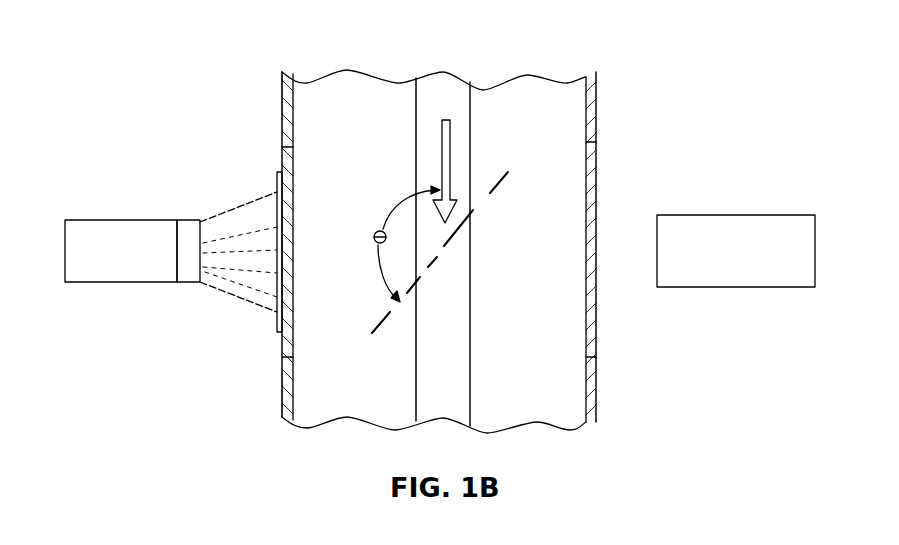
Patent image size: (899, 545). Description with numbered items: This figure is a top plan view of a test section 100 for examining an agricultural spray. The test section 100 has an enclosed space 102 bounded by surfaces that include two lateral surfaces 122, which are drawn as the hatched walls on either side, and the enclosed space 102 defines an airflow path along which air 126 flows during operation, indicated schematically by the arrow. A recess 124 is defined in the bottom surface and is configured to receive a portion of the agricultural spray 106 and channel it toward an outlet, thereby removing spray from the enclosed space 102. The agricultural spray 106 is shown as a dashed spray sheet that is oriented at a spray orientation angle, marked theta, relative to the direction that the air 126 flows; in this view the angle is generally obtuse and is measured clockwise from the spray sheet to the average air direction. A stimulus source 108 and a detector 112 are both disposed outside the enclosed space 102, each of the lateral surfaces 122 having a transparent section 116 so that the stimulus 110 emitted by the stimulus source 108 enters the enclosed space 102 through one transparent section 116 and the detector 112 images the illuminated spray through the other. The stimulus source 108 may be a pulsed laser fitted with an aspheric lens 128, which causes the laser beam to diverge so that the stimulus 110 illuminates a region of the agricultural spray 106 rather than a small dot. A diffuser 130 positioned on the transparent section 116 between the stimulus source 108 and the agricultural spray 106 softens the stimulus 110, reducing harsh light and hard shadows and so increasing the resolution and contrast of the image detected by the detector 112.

The test section 100 is at (625, 48).
The enclosed space 102 is at (533, 101).
The agricultural spray 106 is at (492, 192).
The stimulus source 108 is at (125, 219).
The stimulus 110 is at (240, 206).
The detector 112 is at (692, 214).
The transparent section 116 is at (289, 148).
The lateral surfaces 122 is at (597, 107).
The recess 124 is at (447, 98).
The air 126 is at (442, 135).
The aspheric lens 128 is at (186, 219).
The diffuser 130 is at (277, 320).